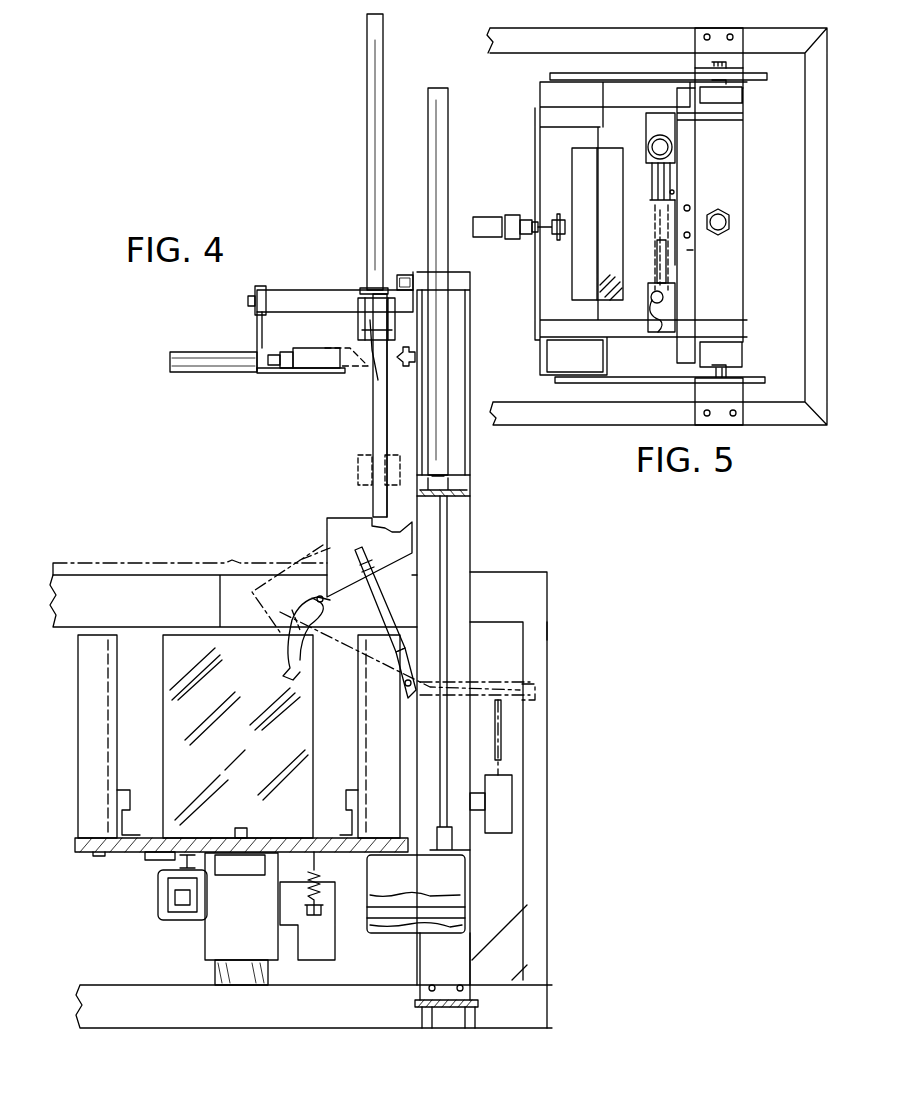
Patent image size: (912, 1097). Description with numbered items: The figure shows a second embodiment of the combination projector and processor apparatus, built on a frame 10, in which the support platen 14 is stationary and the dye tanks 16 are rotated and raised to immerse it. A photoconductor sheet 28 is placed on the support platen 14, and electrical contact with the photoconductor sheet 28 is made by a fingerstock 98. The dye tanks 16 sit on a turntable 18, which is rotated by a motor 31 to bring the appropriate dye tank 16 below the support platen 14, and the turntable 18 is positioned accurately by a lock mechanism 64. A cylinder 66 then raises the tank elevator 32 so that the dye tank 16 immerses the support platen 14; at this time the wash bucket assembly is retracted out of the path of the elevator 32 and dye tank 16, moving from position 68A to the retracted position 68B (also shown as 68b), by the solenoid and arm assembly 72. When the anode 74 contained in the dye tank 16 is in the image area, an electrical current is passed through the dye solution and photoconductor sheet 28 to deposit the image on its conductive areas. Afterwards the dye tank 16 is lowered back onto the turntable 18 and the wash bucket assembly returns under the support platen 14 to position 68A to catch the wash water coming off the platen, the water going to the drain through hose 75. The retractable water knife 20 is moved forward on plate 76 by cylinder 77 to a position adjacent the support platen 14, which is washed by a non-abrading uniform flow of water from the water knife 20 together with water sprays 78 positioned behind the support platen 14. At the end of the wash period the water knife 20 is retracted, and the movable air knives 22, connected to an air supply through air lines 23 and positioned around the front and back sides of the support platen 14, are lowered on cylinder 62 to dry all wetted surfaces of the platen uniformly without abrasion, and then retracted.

In FIG. 4, the frame 10 is at (540, 905).
In FIG. 5, the frame 10 is at (805, 140).
In FIG. 4, the support platen 14 is at (380, 430).
In FIG. 5, the support platen 14 is at (675, 253).
In FIG. 4, the dye tank 16 is at (97, 748).
In FIG. 4, the turntable 18 is at (122, 855).
In FIG. 4, the water knife 20 is at (313, 362).
In FIG. 4, the air knife 22 is at (365, 335).
In FIG. 5, the air knife 22 is at (655, 268).
In FIG. 5, the air line 23 is at (672, 195).
In FIG. 4, the photoconductor sheet 28 is at (372, 406).
In FIG. 4, the motor 31 is at (158, 895).
In FIG. 4, the tank elevator 32 is at (435, 901).
In FIG. 4, the cylinder 62 is at (372, 132).
In FIG. 5, the cylinder 62 is at (665, 147).
In FIG. 4, the lock mechanism 64 is at (320, 878).
In FIG. 4, the cylinder 66 is at (432, 110).
In FIG. 5, the cylinder 66 is at (730, 218).
In FIG. 4, the wash bucket assembly position A 68A is at (340, 522).
In FIG. 4, the wash bucket assembly position B 68B is at (282, 565).
In FIG. 5, the wash bucket assembly position B 68b is at (570, 355).
In FIG. 4, the solenoid and arm assembly 72 is at (500, 800).
In FIG. 4, the anode 74 is at (103, 709).
In FIG. 4, the hose 75 is at (285, 672).
In FIG. 4, the plate 76 is at (323, 373).
In FIG. 5, the plate 76 is at (566, 314).
In FIG. 4, the cylinder 77 is at (210, 360).
In FIG. 5, the cylinder 77 is at (490, 240).
In FIG. 4, the water spray 78 is at (415, 357).
In FIG. 4, the fingerstock 98 is at (385, 345).
In FIG. 5, the fingerstock 98 is at (665, 178).